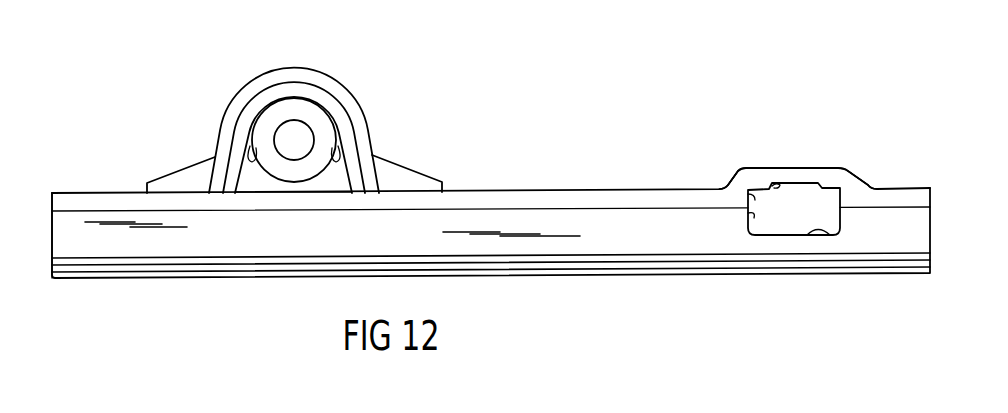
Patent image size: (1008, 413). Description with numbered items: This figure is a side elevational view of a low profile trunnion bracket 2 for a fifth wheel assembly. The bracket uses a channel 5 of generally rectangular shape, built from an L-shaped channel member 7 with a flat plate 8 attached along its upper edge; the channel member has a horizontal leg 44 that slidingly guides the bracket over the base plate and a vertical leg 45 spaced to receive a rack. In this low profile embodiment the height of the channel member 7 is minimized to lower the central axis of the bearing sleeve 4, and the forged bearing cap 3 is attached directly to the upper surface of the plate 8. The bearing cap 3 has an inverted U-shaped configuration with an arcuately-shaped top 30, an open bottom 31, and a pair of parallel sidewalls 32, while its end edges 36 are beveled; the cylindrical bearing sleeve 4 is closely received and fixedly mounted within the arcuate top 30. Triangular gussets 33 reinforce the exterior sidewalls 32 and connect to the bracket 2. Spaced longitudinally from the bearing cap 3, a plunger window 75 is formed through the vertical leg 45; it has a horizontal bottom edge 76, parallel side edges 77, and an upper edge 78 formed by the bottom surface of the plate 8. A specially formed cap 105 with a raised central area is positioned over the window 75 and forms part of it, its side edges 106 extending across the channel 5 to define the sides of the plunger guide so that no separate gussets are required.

The trunnion bracket 2 is at (89, 189).
The bearing cap 3 is at (326, 74).
The bearing sleeve 4 is at (270, 120).
The channel 5 is at (590, 207).
The L-shaped channel member 7 is at (663, 247).
The flat plate 8 is at (539, 197).
The arcuately-shaped top 30 is at (270, 73).
The open bottom 31 is at (262, 185).
The sidewall 32 is at (223, 111).
The gusset 33 is at (173, 183).
The end edge 36 is at (355, 117).
The horizontal leg 44 is at (767, 263).
The vertical leg 45 is at (140, 250).
The window 75 is at (803, 219).
The bottom edge 76 is at (842, 232).
The side edge 77 is at (752, 218).
The upper edge 78 is at (771, 184).
The cap 105 is at (815, 165).
The side edge 106 is at (748, 198).